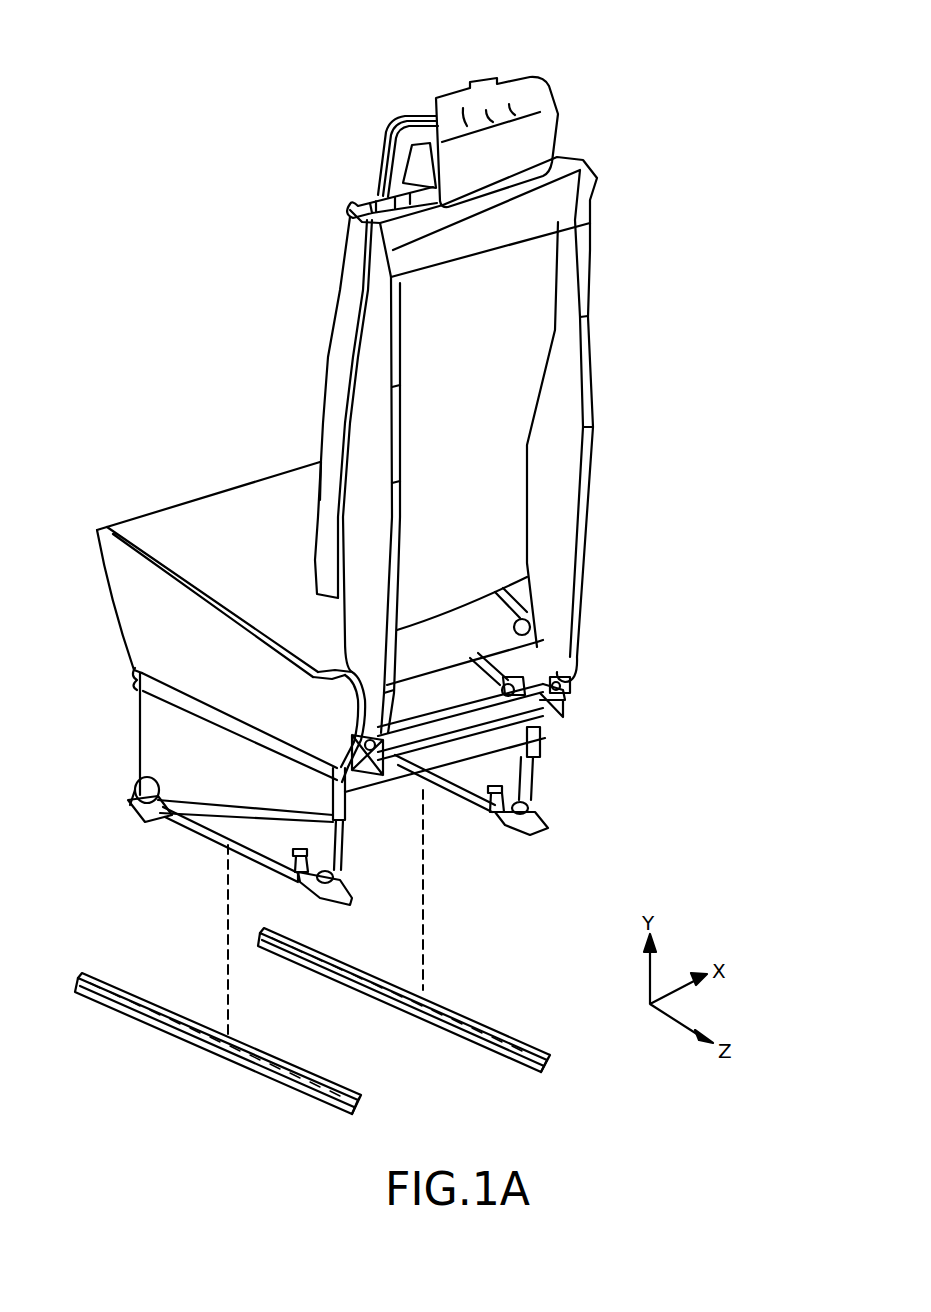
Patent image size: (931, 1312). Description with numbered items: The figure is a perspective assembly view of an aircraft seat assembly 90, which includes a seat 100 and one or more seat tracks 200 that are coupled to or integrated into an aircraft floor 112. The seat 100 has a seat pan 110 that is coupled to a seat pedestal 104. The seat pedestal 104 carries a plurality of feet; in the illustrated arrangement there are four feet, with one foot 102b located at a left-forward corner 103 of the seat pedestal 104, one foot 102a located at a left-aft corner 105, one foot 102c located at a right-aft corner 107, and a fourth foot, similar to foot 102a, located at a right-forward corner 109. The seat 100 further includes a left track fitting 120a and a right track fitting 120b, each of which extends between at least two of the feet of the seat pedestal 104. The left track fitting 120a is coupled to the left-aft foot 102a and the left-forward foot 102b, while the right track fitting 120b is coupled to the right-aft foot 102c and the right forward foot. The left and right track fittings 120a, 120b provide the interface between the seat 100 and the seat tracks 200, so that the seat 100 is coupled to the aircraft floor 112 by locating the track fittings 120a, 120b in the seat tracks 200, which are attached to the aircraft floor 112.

The aircraft seat assembly 90 is at (185, 74).
The seat 100 is at (343, 323).
The right-forward corner 109 is at (305, 452).
The seat pan 110 is at (263, 539).
The left-forward corner 103 is at (140, 705).
The left-aft corner 105 is at (330, 795).
The seat pedestal 104 is at (350, 800).
The right-aft corner 107 is at (540, 733).
The foot 102a is at (352, 880).
The foot 102b is at (136, 786).
The foot 102c is at (548, 808).
The left track fitting 120a is at (268, 862).
The right track fitting 120b is at (460, 797).
The aircraft floor 112 is at (176, 924).
The seat track 200 is at (170, 1035).